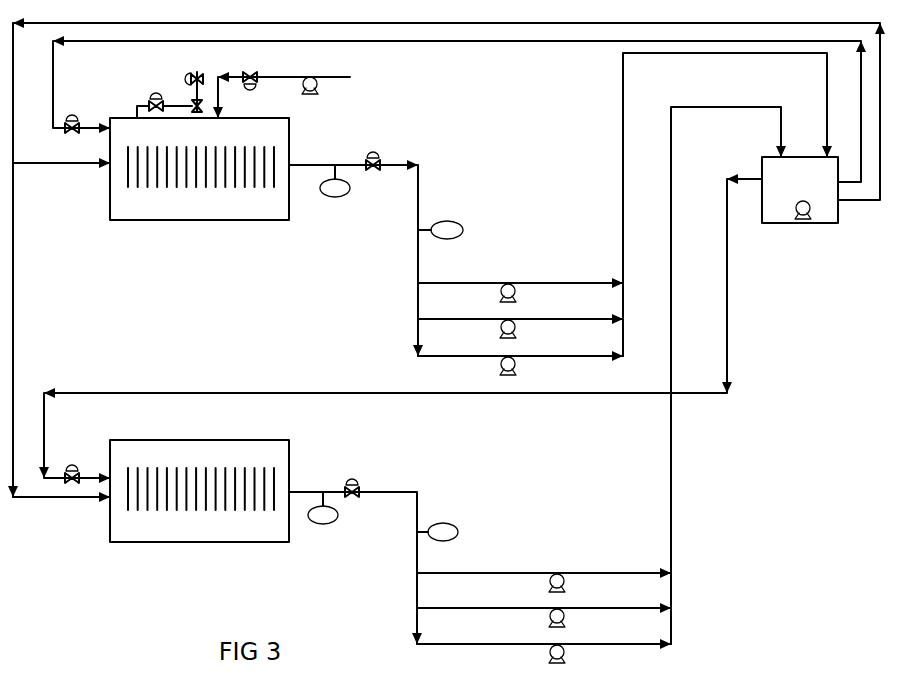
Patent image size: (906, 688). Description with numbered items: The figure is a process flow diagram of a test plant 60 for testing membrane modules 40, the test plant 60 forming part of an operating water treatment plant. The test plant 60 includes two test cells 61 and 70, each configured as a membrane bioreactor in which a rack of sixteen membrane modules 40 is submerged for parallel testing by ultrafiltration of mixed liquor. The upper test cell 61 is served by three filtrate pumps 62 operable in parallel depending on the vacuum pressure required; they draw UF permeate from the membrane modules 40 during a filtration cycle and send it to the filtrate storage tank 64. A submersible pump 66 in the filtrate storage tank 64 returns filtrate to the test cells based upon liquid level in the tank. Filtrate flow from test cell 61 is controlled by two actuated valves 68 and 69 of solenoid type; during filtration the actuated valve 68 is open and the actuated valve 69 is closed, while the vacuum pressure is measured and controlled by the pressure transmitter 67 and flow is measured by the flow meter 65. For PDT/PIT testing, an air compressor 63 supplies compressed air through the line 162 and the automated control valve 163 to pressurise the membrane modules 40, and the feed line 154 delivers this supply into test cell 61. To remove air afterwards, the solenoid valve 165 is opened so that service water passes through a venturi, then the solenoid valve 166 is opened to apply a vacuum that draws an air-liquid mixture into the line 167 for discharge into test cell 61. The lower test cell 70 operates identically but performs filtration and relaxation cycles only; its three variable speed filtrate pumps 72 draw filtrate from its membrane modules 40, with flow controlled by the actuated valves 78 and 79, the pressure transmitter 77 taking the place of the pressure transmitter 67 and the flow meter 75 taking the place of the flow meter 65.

The membrane module 40 is at (165, 197).
The test plant 60 is at (733, 484).
The test cell 61 is at (235, 230).
The filtrate pump 62 is at (516, 292).
The air compressor 63 is at (312, 94).
The filtrate storage tank 64 is at (791, 190).
The flow meter 65 is at (461, 225).
The submersible pump 66 is at (810, 210).
The pressure transmitter 67 is at (348, 190).
The actuated valve 68 is at (377, 156).
The actuated valve 69 is at (72, 118).
The test cell 70 is at (196, 553).
The filtrate pump 72 is at (565, 582).
The flow meter 75 is at (455, 527).
The pressure transmitter 77 is at (335, 521).
The actuated valve 78 is at (356, 484).
The actuated valve 79 is at (72, 469).
The feed line 154 is at (218, 88).
The line 162 is at (262, 74).
The automated control valve 163 is at (256, 87).
The solenoid valve 165 is at (190, 78).
The solenoid valve 166 is at (154, 97).
The line 167 is at (137, 107).